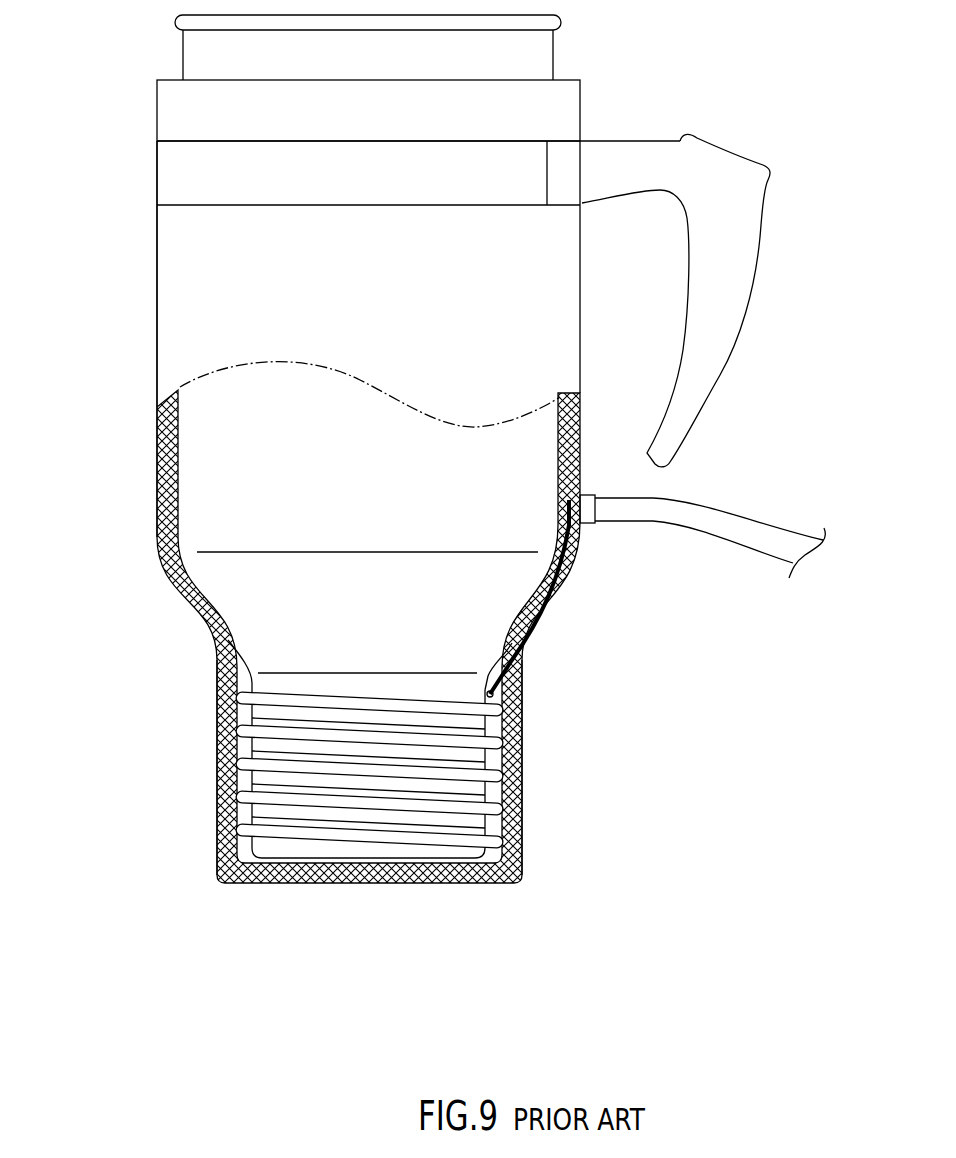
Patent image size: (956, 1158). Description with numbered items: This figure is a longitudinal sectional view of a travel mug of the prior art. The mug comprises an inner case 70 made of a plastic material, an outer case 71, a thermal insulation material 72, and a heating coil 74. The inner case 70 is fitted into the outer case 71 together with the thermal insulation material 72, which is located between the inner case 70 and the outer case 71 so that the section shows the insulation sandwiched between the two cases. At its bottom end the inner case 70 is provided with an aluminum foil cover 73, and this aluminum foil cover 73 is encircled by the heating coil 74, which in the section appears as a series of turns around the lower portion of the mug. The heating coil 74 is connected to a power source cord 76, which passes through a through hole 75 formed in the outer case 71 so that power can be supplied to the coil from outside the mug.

The inner case 70 is at (196, 426).
The outer case 71 is at (157, 498).
The thermal insulation material 72 is at (154, 543).
The aluminum foil cover 73 is at (222, 706).
The heating coil 74 is at (522, 797).
The through hole 75 is at (588, 526).
The power source cord 76 is at (728, 530).